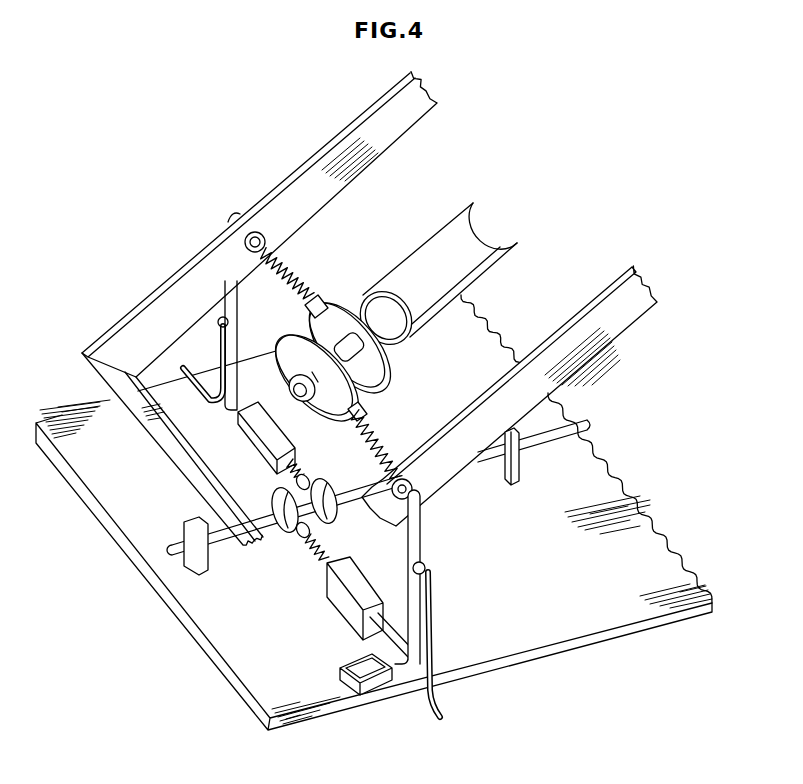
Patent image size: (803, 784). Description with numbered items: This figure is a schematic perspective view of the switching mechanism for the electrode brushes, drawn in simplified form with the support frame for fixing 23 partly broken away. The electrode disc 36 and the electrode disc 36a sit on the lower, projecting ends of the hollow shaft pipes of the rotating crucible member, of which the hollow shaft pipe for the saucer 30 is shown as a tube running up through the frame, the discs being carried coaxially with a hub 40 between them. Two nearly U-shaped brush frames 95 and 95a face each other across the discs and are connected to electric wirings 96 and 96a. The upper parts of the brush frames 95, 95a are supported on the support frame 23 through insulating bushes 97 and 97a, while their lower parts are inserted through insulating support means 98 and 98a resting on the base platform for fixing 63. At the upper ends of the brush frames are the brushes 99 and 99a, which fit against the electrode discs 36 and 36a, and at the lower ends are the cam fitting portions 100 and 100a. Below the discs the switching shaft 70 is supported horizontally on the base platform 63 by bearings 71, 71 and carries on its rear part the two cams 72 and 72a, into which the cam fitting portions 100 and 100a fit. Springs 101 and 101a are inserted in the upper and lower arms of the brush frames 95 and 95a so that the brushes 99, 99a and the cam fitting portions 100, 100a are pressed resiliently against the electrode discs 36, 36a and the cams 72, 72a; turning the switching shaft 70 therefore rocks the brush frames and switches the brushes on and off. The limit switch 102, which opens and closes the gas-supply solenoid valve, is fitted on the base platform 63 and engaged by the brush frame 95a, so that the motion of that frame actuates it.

The support frame for fixing 23 is at (597, 350).
The hollow shaft pipe for the saucer 30 is at (428, 247).
The electrode disc 36 is at (382, 360).
The electrode disc 36a is at (284, 352).
The hub 40 is at (288, 385).
The base platform for fixing 63 is at (562, 647).
The switching shaft 70 is at (590, 424).
The bearing 71 is at (182, 522).
The cam 72 is at (336, 514).
The cam 72a is at (275, 490).
The brush frame 95 is at (238, 296).
The brush frame 95a is at (422, 537).
The electric wiring 96 is at (187, 368).
The electric wiring 96a is at (438, 702).
The insulating bush 97 is at (257, 232).
The insulating bush 97a is at (413, 481).
The insulating support means 98 is at (243, 430).
The insulating support means 98a is at (352, 608).
The brush 99 is at (322, 299).
The brush 99a is at (360, 411).
The cam fitting portion 100 is at (310, 482).
The cam fitting portion 100a is at (308, 538).
The spring 101 is at (287, 272).
The spring 101a is at (368, 432).
The limit switch 102 is at (368, 688).